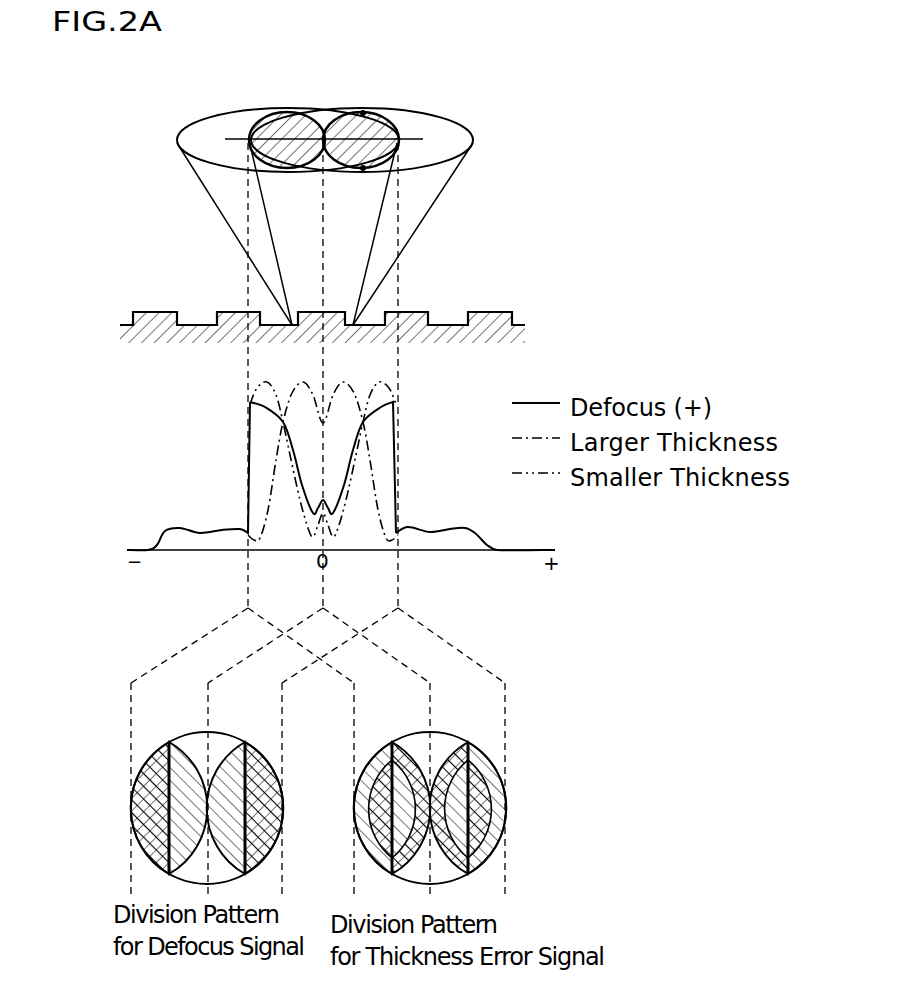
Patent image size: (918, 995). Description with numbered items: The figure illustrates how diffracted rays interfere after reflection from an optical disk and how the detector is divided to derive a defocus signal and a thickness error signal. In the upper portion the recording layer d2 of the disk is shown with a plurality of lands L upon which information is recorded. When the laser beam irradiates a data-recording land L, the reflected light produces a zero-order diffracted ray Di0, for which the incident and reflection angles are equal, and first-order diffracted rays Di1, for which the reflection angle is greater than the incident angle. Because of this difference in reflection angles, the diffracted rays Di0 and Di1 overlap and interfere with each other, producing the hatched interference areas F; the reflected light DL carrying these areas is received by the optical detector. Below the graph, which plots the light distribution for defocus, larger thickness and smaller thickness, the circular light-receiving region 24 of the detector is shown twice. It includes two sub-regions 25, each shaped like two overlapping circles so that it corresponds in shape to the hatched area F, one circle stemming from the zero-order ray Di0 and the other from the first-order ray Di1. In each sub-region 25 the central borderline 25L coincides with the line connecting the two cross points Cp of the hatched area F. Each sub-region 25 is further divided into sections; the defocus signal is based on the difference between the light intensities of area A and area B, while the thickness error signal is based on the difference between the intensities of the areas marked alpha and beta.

The light-receiving region 24 is at (340, 775).
The sub-region 25 is at (340, 782).
The central borderline 25L is at (473, 862).
The recording layer d2 is at (349, 298).
The land L is at (150, 312).
The hatched area F is at (280, 128).
The cross point Cp is at (362, 142).
The diffracted light DL is at (408, 138).
The 0-order diffracted ray Di0 is at (324, 115).
The 1-order diffracted ray Di1 is at (192, 135).